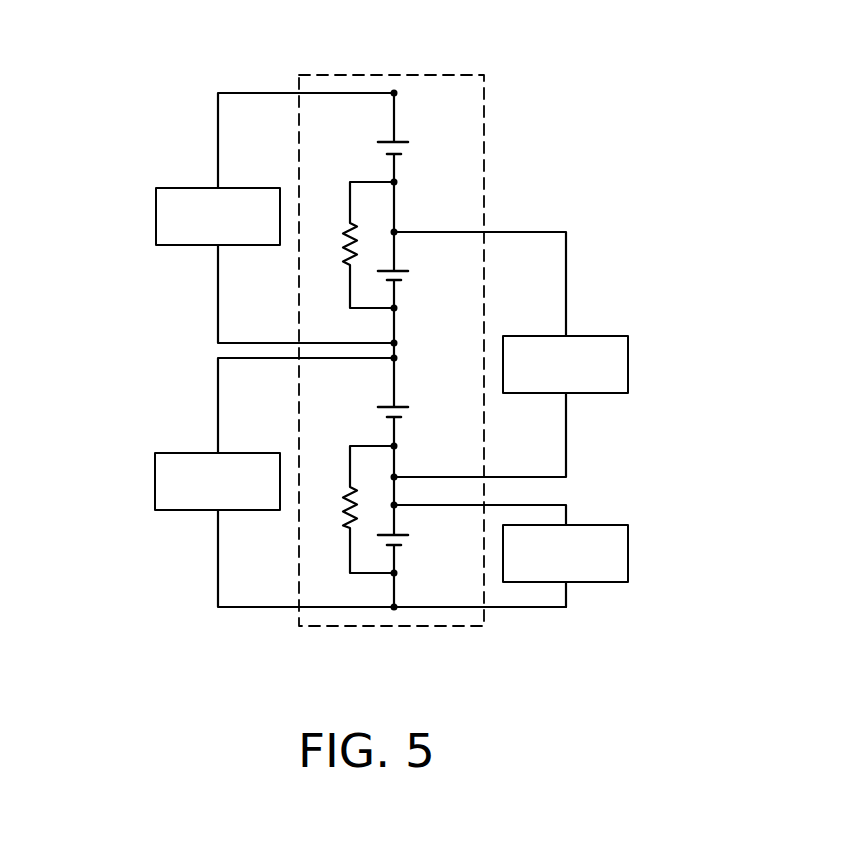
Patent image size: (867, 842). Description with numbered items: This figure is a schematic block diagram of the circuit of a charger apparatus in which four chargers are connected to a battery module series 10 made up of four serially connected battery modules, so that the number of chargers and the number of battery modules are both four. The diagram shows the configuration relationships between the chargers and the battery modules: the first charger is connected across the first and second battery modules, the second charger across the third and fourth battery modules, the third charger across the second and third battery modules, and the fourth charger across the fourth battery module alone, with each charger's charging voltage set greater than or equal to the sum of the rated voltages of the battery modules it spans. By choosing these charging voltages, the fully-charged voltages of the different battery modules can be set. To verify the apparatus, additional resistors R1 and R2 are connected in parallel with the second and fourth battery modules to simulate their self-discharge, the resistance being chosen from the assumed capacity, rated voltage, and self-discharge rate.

The battery module series 10 is at (436, 73).
The resistor R1 is at (353, 245).
The resistor R2 is at (352, 509).